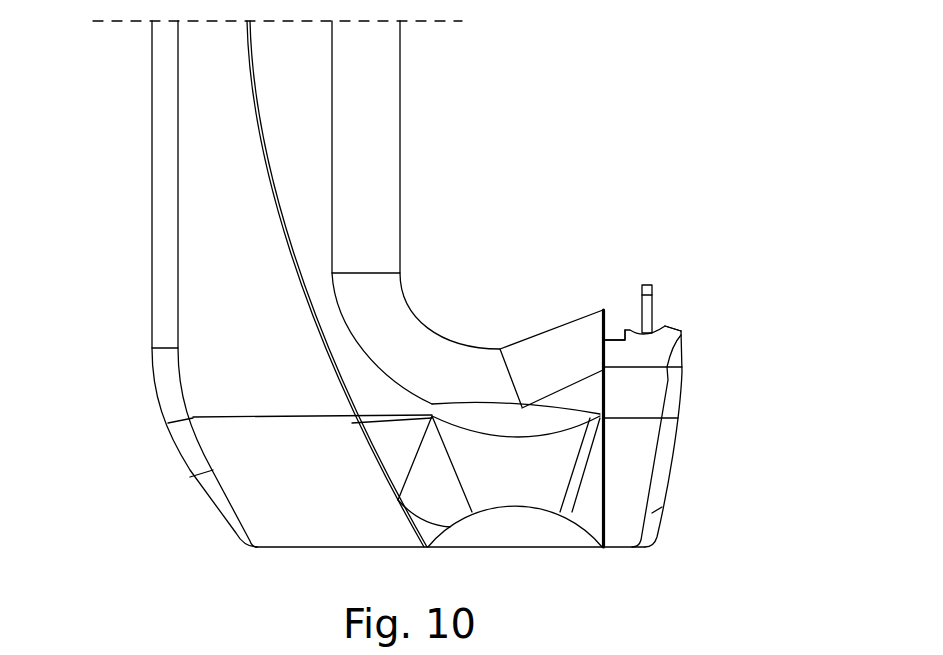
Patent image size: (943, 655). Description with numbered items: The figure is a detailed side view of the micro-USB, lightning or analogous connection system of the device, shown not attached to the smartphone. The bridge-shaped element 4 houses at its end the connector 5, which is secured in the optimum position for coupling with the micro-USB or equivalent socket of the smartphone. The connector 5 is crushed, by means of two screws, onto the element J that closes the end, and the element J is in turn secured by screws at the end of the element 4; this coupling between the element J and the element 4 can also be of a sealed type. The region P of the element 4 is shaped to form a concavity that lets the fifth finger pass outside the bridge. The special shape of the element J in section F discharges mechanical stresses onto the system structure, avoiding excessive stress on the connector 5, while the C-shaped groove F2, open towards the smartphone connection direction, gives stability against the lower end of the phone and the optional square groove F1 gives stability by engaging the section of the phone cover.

The element 4 is at (373, 185).
The connector 5 is at (647, 283).
The section F is at (676, 300).
The square groove F1 is at (615, 333).
The C-shaped groove F2 is at (673, 322).
The region P is at (517, 480).
The element J is at (637, 447).